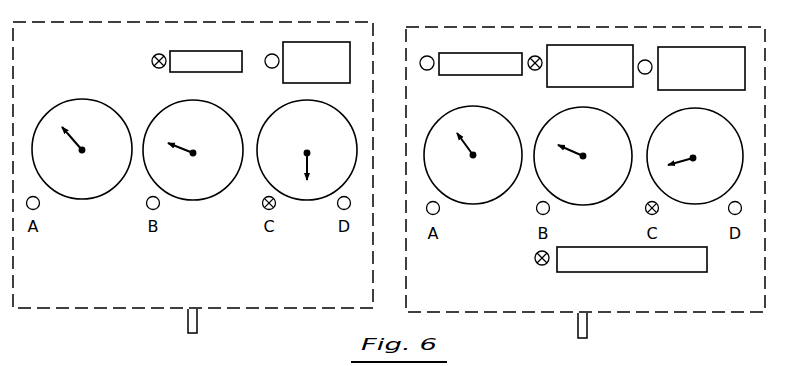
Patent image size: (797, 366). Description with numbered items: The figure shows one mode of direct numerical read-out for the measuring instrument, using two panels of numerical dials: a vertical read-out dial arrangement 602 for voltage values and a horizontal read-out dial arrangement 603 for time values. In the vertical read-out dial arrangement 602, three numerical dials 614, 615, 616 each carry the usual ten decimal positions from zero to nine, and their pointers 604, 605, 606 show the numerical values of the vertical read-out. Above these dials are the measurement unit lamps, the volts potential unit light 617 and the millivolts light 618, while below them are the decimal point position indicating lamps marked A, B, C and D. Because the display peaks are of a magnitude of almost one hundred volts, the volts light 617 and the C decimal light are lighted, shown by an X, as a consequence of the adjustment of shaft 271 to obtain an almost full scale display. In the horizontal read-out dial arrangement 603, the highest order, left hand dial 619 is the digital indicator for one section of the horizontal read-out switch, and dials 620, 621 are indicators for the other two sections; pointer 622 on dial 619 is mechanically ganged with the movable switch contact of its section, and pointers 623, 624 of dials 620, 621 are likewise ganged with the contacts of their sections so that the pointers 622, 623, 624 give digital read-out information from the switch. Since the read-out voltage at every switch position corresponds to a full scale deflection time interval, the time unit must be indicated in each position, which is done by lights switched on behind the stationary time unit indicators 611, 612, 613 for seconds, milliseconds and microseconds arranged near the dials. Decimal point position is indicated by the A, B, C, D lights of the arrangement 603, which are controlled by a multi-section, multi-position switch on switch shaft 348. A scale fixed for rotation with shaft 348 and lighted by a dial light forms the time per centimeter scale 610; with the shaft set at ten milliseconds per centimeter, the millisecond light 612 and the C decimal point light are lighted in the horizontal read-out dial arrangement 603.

The vertical read-out dial arrangement 602 is at (324, 304).
The horizontal read-out dial arrangement 603 is at (715, 307).
The pointer 604 is at (75, 144).
The pointer 605 is at (184, 146).
The pointer 606 is at (301, 160).
The time/cm. scale 610 is at (707, 258).
The time unit indicator 611 is at (487, 76).
The time unit indicator 612 is at (602, 88).
The time unit indicator 613 is at (712, 92).
The dial 614 is at (82, 161).
The dial 615 is at (193, 161).
The dial 616 is at (307, 161).
The volts potential unit light 617 is at (215, 75).
The millivolts potential unit light 618 is at (323, 86).
The dial 619 is at (473, 166).
The dial 620 is at (583, 167).
The dial 621 is at (695, 167).
The pointer 622 is at (465, 148).
The pointer 623 is at (575, 149).
The pointer 624 is at (684, 166).
The shaft 271 is at (197, 325).
The switch shaft 348 is at (587, 328).